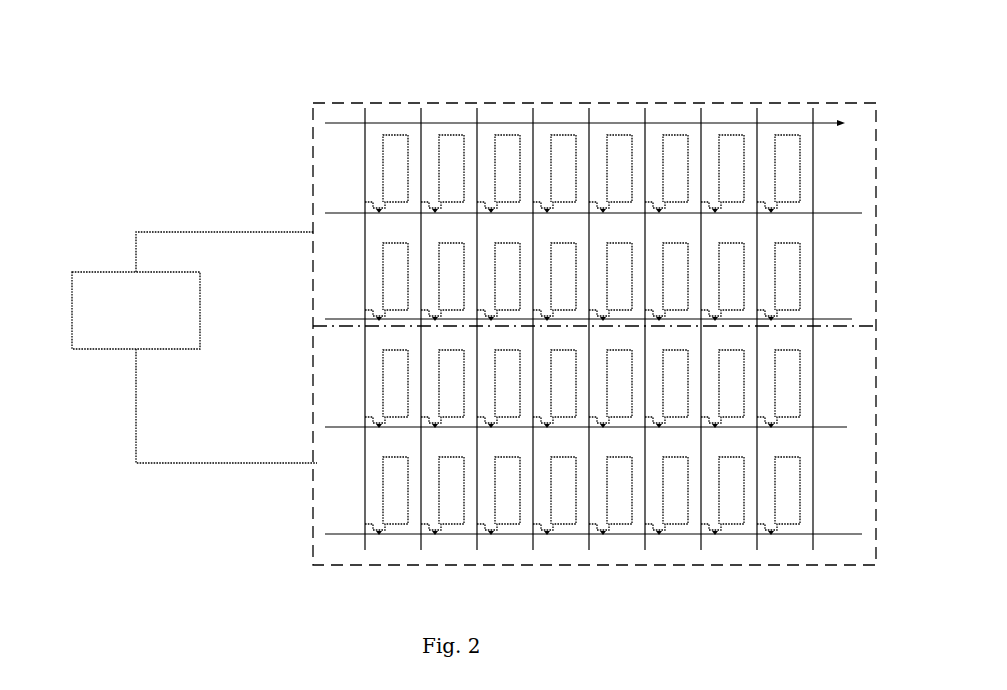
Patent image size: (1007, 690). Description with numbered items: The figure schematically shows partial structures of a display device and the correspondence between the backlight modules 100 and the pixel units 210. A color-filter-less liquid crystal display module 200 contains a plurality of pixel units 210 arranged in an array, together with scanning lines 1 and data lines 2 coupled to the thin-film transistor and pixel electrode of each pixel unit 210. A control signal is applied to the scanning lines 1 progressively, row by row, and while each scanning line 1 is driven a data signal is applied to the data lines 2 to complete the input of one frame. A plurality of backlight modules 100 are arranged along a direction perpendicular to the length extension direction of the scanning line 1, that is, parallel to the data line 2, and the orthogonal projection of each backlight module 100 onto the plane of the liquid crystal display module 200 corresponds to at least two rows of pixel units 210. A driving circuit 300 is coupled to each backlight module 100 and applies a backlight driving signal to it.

The color-filter-less liquid crystal display module 200 is at (787, 91).
The backlight module 100 is at (314, 212).
The scanning line 1 is at (855, 220).
The data line 2 is at (533, 100).
The pixel unit 210 is at (637, 136).
The driving circuit 300 is at (98, 272).